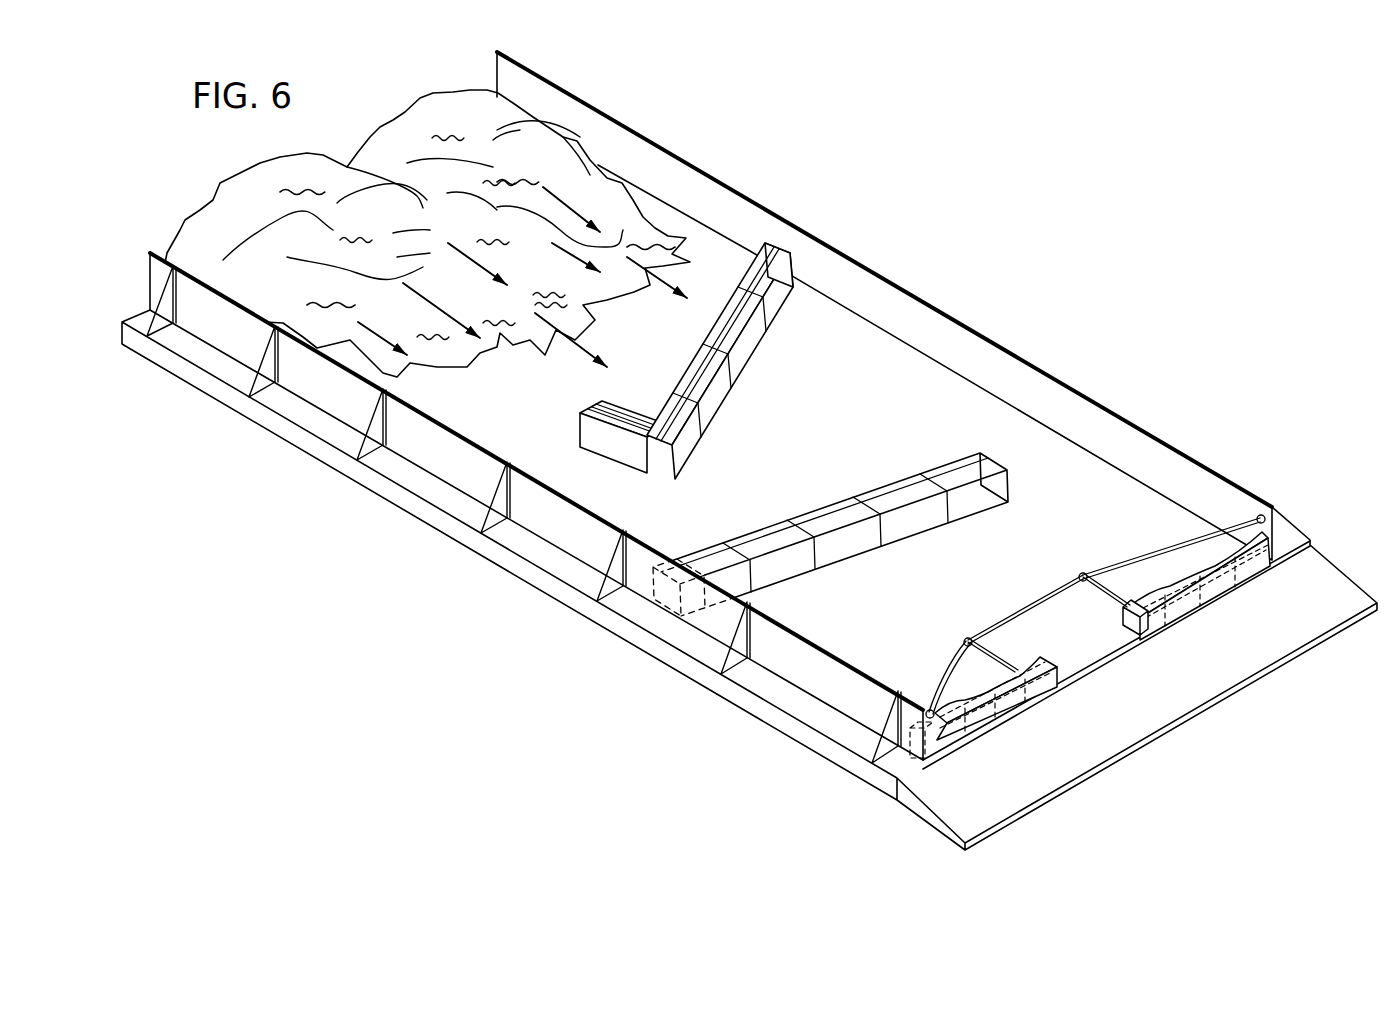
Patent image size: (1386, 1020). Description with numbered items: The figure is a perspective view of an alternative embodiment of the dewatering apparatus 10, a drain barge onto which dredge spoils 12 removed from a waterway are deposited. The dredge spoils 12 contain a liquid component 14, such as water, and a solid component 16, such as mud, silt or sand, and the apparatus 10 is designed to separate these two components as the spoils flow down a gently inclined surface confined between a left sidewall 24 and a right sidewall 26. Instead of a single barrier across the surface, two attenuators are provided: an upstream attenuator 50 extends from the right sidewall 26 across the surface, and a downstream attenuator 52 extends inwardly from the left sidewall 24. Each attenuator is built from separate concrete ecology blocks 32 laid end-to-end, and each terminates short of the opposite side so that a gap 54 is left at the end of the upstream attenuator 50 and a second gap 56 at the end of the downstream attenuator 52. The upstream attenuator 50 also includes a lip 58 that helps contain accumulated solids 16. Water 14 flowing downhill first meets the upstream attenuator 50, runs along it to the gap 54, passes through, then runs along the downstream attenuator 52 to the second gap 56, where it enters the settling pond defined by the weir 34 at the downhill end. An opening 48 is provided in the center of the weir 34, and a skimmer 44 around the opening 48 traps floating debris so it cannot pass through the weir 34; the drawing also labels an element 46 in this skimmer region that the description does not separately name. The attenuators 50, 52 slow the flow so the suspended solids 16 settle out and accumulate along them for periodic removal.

The apparatus 10 is at (897, 200).
The dredge spoils 12 is at (458, 108).
The liquid component 14 is at (645, 221).
The solid component 16 is at (567, 150).
The left sidewall 24 is at (594, 548).
The right sidewall 26 is at (891, 282).
The ecology block 32 is at (747, 345).
The weir 34 is at (1210, 540).
The skimmer 44 is at (1047, 597).
The tie rod 46 is at (1133, 557).
The opening 48 is at (1128, 624).
The upstream attenuator 50 is at (773, 250).
The downstream attenuator 52 is at (977, 455).
The gap 54 is at (504, 554).
The second gap 56 is at (1040, 431).
The lip 58 is at (592, 432).